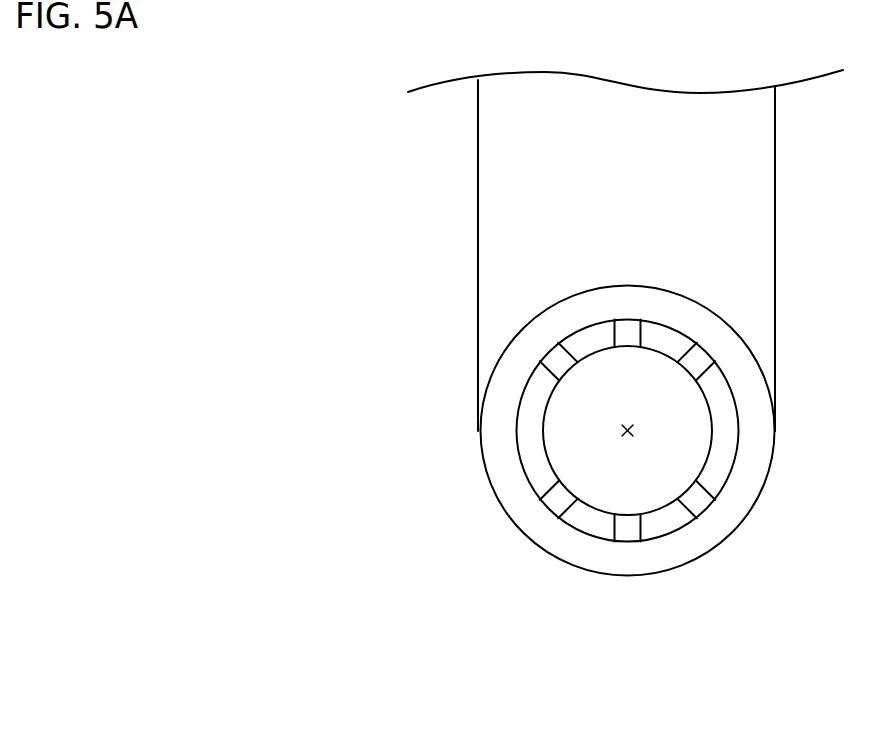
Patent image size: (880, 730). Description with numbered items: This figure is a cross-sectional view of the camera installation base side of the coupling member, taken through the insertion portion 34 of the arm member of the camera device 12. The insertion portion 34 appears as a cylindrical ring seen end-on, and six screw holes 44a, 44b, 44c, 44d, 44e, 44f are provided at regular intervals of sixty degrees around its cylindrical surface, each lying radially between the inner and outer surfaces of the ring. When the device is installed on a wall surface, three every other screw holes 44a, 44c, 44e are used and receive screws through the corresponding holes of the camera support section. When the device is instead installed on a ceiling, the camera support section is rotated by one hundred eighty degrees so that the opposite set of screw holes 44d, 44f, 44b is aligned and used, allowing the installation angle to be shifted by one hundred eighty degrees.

The cylindrical member (tube) 12 is at (384, 155).
The insertion portion 34 is at (528, 433).
The screw hole 44a is at (628, 407).
The screw hole 44b is at (611, 415).
The screw hole 44c is at (611, 447).
The screw hole 44d is at (628, 452).
The screw hole 44e is at (643, 447).
The screw hole 44f is at (643, 415).